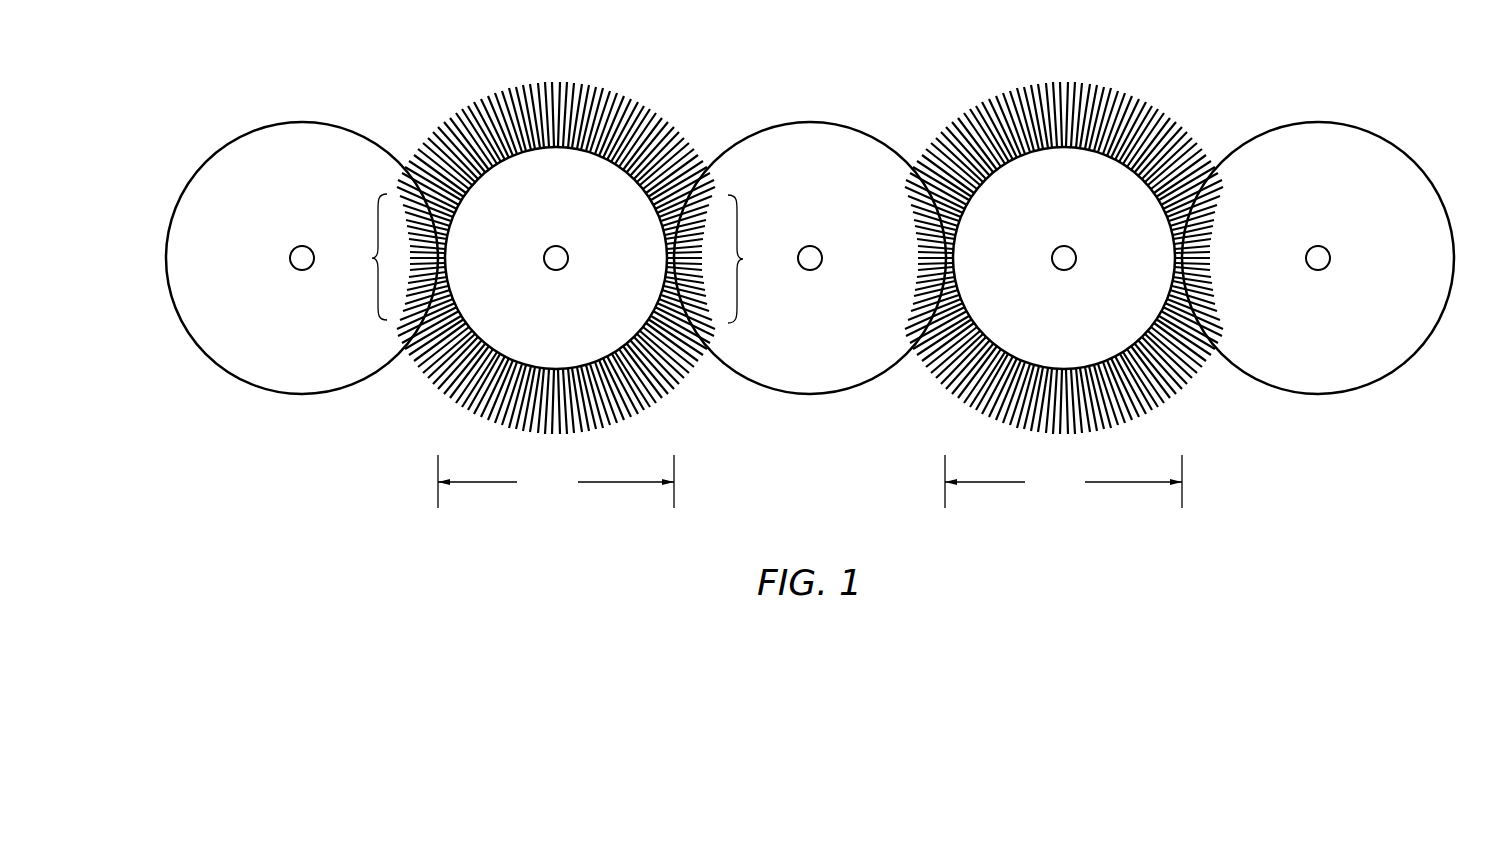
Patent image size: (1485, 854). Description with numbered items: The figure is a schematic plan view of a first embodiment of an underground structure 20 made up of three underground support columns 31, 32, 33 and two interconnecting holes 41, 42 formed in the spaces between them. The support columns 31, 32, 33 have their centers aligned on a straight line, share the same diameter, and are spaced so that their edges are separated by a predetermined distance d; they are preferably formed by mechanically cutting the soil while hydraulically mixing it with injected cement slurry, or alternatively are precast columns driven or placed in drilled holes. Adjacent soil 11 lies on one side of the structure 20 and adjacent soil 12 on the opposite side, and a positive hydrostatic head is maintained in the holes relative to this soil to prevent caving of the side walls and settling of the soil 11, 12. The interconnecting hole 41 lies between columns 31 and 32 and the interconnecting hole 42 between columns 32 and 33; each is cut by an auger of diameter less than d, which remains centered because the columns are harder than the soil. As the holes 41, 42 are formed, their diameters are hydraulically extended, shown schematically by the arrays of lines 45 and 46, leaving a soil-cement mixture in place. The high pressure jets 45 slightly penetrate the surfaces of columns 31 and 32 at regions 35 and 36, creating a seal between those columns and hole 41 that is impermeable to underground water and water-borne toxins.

The structure 20 is at (396, 123).
The adjacent soil 11 is at (991, 31).
The adjacent soil 12 is at (831, 510).
The underground support column 31 is at (262, 388).
The underground support column 32 is at (766, 388).
The underground support column 33 is at (1393, 373).
The interconnecting hole 41 is at (558, 236).
The interconnecting hole 42 is at (1064, 243).
The array of lines 45 is at (505, 92).
The array of lines 46 is at (1167, 72).
The region 35 is at (366, 257).
The region 36 is at (751, 259).